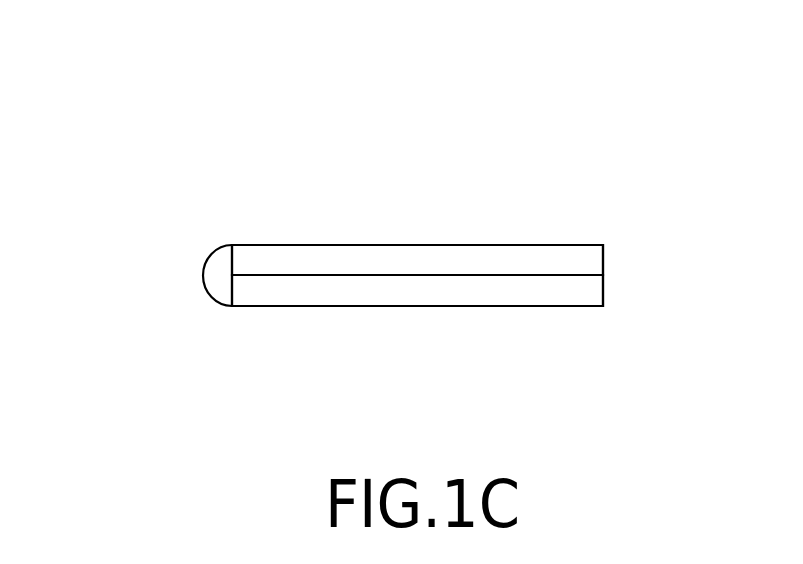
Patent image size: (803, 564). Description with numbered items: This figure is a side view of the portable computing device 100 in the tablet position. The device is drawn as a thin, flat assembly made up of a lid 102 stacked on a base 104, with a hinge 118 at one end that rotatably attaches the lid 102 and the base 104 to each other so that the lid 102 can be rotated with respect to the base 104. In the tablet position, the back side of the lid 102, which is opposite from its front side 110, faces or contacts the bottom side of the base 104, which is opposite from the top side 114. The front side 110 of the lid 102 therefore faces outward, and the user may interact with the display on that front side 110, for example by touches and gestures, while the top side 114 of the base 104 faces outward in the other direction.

The portable computing device 100 is at (250, 94).
The lid 102 is at (603, 252).
The base 104 is at (603, 285).
The front side 110 is at (397, 245).
The top side 114 is at (422, 307).
The hinge 118 is at (203, 272).